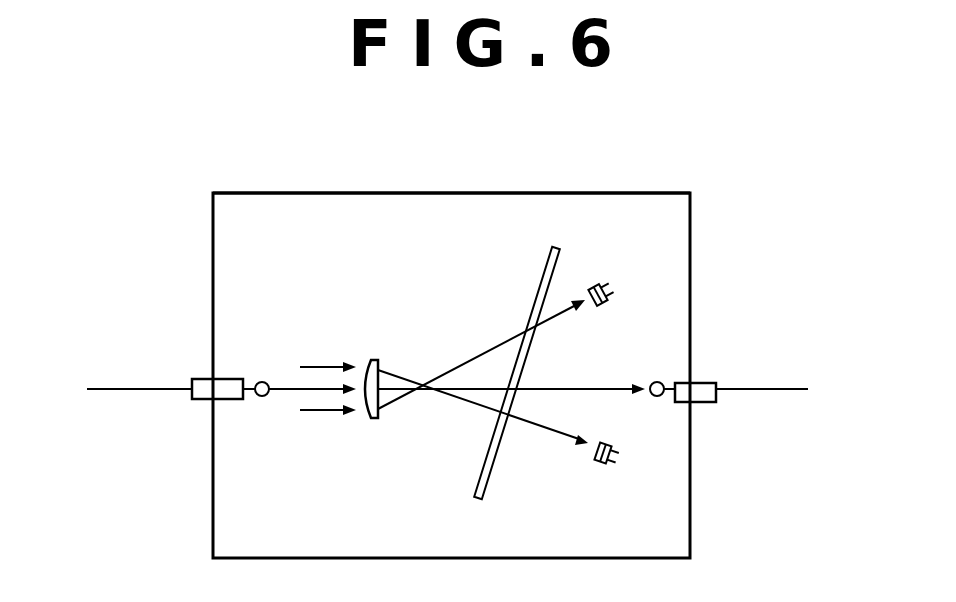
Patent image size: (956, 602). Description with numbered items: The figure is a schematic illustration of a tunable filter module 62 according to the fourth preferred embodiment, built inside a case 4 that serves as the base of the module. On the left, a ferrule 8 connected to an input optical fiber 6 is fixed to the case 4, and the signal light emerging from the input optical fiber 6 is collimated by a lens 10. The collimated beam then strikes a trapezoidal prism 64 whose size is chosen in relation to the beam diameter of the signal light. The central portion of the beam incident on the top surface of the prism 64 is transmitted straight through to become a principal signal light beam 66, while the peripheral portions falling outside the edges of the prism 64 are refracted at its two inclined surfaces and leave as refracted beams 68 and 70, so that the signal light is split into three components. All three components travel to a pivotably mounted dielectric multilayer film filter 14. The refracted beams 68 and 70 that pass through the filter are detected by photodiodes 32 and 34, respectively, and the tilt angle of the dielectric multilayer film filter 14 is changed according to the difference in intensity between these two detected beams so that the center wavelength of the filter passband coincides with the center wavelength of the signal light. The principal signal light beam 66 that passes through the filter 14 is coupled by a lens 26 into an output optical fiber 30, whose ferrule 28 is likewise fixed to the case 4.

The case 4 is at (350, 193).
The tunable filter module 62 is at (489, 190).
The input optical fiber 6 is at (128, 388).
The ferrule 8 is at (202, 397).
The lens 10 is at (262, 381).
The trapezoidal prism 64 is at (367, 360).
The refracted beam 68 is at (483, 352).
The refracted beam 70 is at (470, 405).
The dielectric multilayer film filter 14 is at (547, 265).
The principal signal light beam 66 is at (568, 387).
The photodiode 32 is at (598, 282).
The photodiode 34 is at (601, 468).
The lens 26 is at (657, 382).
The ferrule 28 is at (710, 403).
The output optical fiber 30 is at (768, 389).